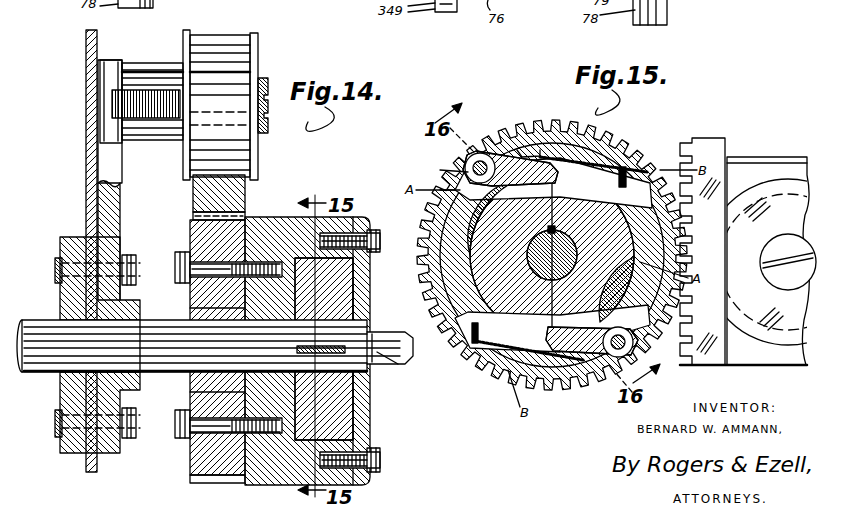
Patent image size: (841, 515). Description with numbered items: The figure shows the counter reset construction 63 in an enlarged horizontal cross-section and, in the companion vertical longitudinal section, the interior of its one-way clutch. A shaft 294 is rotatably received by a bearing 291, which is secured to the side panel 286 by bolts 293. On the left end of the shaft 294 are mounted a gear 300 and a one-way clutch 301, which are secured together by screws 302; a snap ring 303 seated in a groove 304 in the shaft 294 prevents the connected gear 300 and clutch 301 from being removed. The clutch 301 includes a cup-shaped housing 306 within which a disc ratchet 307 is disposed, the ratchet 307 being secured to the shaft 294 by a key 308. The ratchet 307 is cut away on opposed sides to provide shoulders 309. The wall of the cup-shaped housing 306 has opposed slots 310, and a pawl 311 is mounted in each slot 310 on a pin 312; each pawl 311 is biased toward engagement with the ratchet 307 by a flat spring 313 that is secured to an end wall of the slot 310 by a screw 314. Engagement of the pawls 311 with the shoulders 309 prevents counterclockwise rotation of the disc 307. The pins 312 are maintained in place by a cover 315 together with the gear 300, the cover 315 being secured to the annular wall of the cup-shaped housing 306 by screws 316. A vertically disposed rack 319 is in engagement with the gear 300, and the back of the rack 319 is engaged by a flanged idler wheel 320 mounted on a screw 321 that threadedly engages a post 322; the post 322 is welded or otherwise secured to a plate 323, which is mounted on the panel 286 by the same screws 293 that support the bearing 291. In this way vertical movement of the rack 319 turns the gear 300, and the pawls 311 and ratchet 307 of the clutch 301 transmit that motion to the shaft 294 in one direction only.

In FIG. 14, the counter reset construction 63 is at (294, 174).
In FIG. 15, the counter reset construction 63 is at (686, 100).
In FIG. 14, the side panel 286 is at (86, 62).
In FIG. 14, the bearing 291 is at (73, 292).
In FIG. 14, the bolts 293 is at (57, 262).
In FIG. 14, the shaft 294 is at (42, 364).
In FIG. 15, the shaft 294 is at (575, 255).
In FIG. 14, the gear 300 is at (190, 468).
In FIG. 15, the gear 300 is at (553, 393).
In FIG. 14, the one-way clutch 301 is at (282, 220).
In FIG. 14, the screws 302 is at (178, 262).
In FIG. 14, the snap ring 303 is at (328, 352).
In FIG. 14, the groove 304 is at (386, 372).
In FIG. 14, the cup-shaped housing 306 is at (347, 218).
In FIG. 14, the disc ratchet 307 is at (332, 275).
In FIG. 14, the key 308 is at (332, 380).
In FIG. 15, the key 308 is at (560, 229).
In FIG. 15, the shoulders 309 is at (607, 147).
In FIG. 15, the slots 310 is at (587, 138).
In FIG. 15, the pawl 311 is at (507, 153).
In FIG. 15, the pin 312 is at (455, 172).
In FIG. 15, the flat spring 313 is at (622, 165).
In FIG. 15, the screw 314 is at (630, 178).
In FIG. 14, the cover 315 is at (368, 437).
In FIG. 14, the screws 316 is at (378, 232).
In FIG. 14, the rack 319 is at (195, 195).
In FIG. 15, the rack 319 is at (712, 140).
In FIG. 14, the flanged idler wheel 320 is at (215, 58).
In FIG. 15, the flanged idler wheel 320 is at (772, 190).
In FIG. 14, the screw 321 is at (268, 80).
In FIG. 15, the screw 321 is at (745, 350).
In FIG. 14, the post 322 is at (172, 47).
In FIG. 14, the plate 323 is at (112, 150).
In FIG. 15, the plate 323 is at (755, 173).